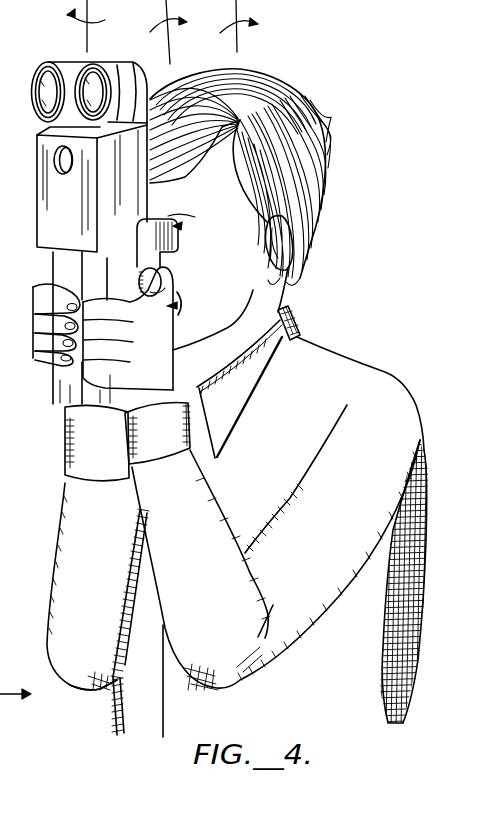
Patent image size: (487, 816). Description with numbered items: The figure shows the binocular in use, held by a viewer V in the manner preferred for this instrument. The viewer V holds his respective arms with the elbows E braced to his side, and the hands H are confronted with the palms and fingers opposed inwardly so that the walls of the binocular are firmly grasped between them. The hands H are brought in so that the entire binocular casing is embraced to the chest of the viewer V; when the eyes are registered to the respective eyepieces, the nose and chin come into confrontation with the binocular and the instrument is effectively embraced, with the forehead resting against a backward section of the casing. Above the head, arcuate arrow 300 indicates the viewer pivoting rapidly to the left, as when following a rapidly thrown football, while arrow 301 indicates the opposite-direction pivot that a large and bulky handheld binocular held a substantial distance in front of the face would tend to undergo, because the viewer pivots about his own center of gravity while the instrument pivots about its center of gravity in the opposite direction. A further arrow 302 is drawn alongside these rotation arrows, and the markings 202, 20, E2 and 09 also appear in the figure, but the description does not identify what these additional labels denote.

The arcuate arrow 300 is at (239, 30).
The arrow 301 is at (90, 22).
The rotation axis 302 is at (170, 26).
The viewer V is at (325, 148).
The hands H is at (33, 353).
The hand-held viewing device 202 is at (91, 248).
The sleeve / arm 20 is at (95, 568).
The elbows E is at (92, 686).
The elbow direction arrow E2 is at (0, 727).
The reference numeral (cut off) 09 is at (9, 784).